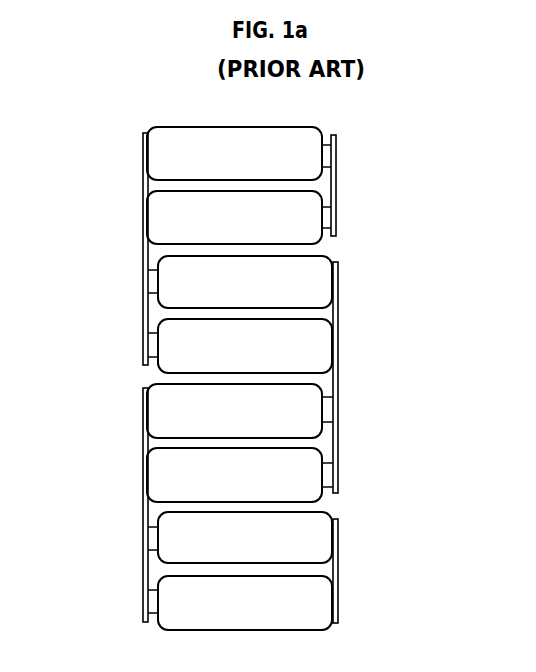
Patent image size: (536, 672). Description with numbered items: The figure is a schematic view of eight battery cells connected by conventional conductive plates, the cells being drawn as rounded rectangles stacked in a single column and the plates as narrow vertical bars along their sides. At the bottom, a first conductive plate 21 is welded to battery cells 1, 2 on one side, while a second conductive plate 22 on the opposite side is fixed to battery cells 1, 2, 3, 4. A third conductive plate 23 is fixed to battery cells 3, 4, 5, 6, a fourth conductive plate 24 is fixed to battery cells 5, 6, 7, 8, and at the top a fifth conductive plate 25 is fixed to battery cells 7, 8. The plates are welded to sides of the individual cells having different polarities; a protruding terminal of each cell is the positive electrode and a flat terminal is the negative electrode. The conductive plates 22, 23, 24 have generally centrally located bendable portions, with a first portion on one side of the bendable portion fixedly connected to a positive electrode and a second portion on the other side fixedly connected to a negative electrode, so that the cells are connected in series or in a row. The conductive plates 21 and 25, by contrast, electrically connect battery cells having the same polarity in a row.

The battery cell 1 is at (240, 537).
The battery cell 2 is at (240, 603).
The battery cell 3 is at (240, 475).
The battery cell 4 is at (240, 411).
The battery cell 5 is at (240, 282).
The battery cell 6 is at (240, 346).
The battery cell 7 is at (239, 217).
The battery cell 8 is at (239, 153).
The first conductive plate 21 is at (338, 570).
The second conductive plate 22 is at (143, 510).
The third conductive plate 23 is at (338, 381).
The fourth conductive plate 24 is at (143, 247).
The fifth conductive plate 25 is at (337, 184).